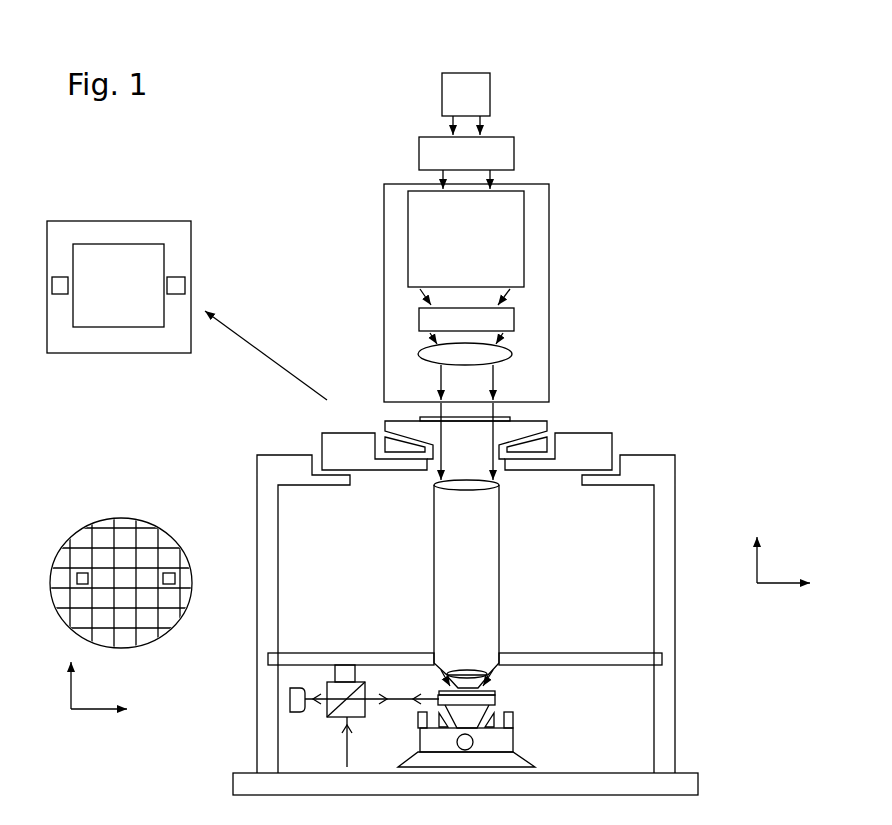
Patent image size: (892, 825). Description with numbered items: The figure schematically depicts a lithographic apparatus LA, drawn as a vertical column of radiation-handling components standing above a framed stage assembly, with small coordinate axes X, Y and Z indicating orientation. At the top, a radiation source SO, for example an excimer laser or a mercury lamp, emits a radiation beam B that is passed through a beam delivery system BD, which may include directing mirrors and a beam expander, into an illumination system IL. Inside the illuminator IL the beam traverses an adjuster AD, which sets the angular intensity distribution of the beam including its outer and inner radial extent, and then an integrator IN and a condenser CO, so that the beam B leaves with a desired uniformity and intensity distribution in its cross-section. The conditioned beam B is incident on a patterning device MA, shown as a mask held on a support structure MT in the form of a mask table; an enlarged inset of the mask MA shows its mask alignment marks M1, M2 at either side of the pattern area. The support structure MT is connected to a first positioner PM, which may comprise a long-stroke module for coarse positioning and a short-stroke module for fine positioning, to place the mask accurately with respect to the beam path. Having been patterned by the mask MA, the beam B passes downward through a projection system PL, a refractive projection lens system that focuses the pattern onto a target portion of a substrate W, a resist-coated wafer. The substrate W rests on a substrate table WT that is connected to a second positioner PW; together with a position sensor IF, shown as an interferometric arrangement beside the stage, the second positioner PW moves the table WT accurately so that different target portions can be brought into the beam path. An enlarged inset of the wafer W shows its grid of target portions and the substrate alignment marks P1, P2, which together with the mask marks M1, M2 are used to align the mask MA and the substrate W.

The radiation source SO is at (490, 97).
The beam delivery system BD is at (514, 160).
The illumination system IL is at (549, 203).
The adjuster AD is at (524, 250).
The integrator IN is at (514, 316).
The condenser CO is at (512, 356).
The radiation beam B is at (468, 412).
The patterning device MA is at (420, 418).
The mask alignment mark M1 is at (177, 277).
The mask alignment mark M2 is at (60, 277).
The support structure MT is at (547, 424).
The first positioner PM is at (322, 433).
The lithographic apparatus LA is at (677, 297).
The projection system PL is at (500, 563).
The substrate W is at (205, 577).
The substrate alignment mark P1 is at (82, 573).
The substrate alignment mark P2 is at (169, 573).
The substrate table WT is at (493, 700).
The second positioner PW is at (513, 745).
The position sensor IF is at (316, 723).
The X axis X is at (440, 661).
The Y axis Y is at (59, 685).
The Z axis Z is at (744, 560).